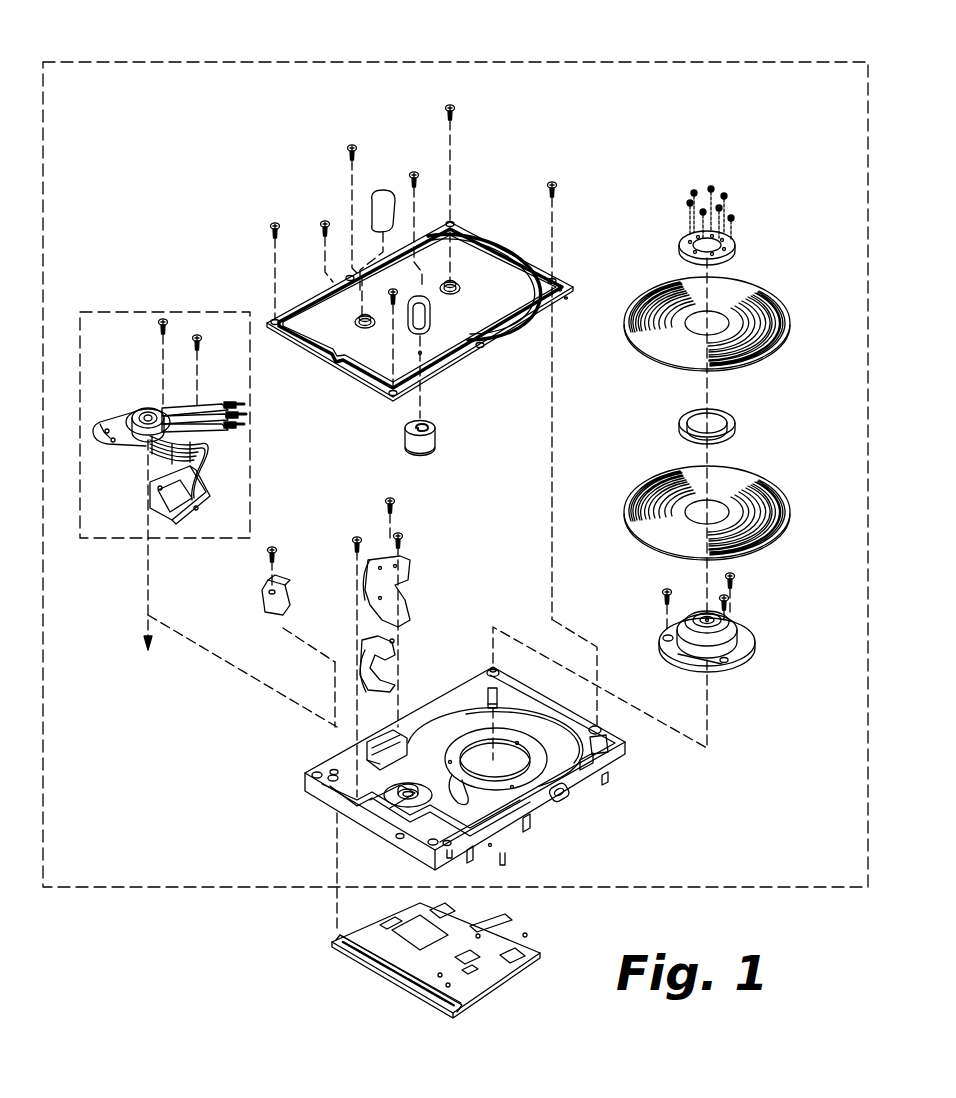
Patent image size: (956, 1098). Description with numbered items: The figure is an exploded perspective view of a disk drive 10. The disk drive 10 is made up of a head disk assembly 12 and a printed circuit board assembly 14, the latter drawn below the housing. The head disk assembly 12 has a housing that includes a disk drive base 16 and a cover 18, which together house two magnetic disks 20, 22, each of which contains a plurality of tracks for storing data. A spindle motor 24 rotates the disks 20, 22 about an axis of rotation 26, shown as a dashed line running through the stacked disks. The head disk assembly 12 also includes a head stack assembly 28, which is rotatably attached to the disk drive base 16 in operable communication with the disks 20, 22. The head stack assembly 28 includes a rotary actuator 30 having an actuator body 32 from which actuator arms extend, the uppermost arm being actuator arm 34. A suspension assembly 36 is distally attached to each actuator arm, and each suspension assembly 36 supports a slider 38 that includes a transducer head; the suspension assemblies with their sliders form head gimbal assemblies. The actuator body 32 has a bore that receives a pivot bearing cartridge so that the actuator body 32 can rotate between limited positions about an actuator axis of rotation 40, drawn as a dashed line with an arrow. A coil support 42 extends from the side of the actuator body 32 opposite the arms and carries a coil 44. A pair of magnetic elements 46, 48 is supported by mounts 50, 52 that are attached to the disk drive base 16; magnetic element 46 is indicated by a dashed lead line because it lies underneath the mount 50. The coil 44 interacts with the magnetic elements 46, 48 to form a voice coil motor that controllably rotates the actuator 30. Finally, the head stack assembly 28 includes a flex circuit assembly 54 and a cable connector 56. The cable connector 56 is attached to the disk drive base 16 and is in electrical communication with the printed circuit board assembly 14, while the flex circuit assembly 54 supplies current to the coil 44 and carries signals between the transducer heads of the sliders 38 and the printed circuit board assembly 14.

The disk drive 10 is at (240, 56).
The head disk assembly 12 is at (182, 890).
The printed circuit board assembly 14 is at (525, 965).
The disk drive base 16 is at (500, 838).
The cover 18 is at (500, 322).
The magnetic disk 20 is at (648, 303).
The magnetic disk 22 is at (650, 490).
The spindle motor 24 is at (728, 626).
The axis of rotation 26 is at (712, 716).
The head stack assembly 28 is at (190, 312).
The rotary actuator 30 is at (150, 406).
The actuator body 32 is at (138, 410).
The actuator arm 34 is at (190, 408).
The suspension assembly 36 is at (200, 412).
The slider 38 is at (240, 418).
The actuator axis of rotation 40 is at (150, 568).
The coil support 42 is at (95, 428).
The coil 44 is at (104, 425).
The magnetic element 46 is at (400, 587).
The magnetic element 48 is at (400, 646).
The mount 50 is at (352, 577).
The mount 52 is at (362, 676).
The flex circuit assembly 54 is at (198, 454).
The cable connector 56 is at (160, 508).